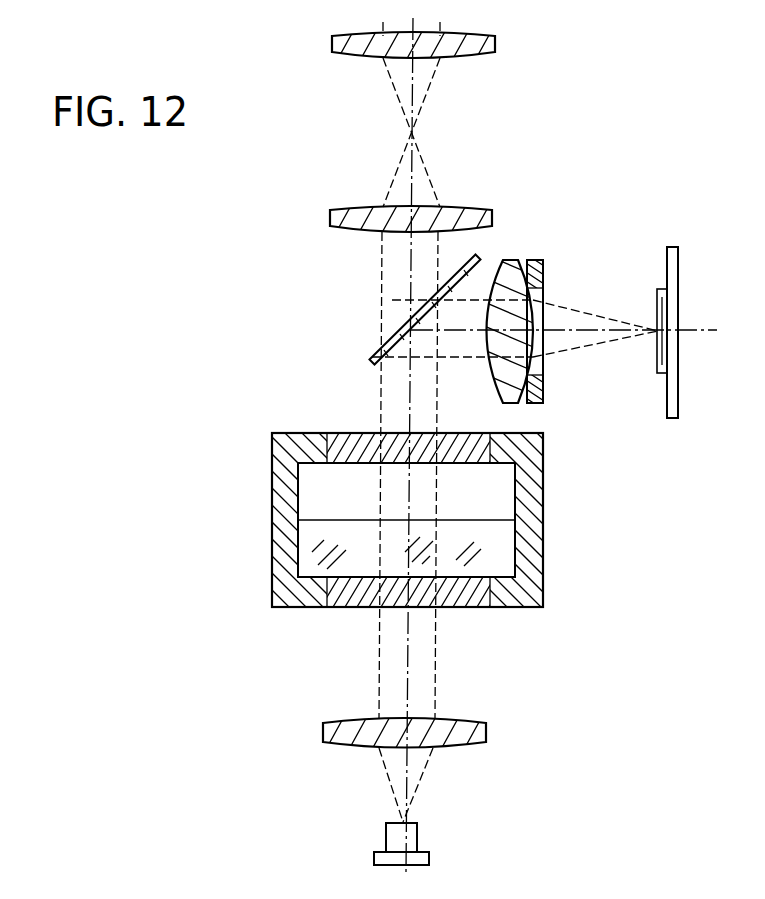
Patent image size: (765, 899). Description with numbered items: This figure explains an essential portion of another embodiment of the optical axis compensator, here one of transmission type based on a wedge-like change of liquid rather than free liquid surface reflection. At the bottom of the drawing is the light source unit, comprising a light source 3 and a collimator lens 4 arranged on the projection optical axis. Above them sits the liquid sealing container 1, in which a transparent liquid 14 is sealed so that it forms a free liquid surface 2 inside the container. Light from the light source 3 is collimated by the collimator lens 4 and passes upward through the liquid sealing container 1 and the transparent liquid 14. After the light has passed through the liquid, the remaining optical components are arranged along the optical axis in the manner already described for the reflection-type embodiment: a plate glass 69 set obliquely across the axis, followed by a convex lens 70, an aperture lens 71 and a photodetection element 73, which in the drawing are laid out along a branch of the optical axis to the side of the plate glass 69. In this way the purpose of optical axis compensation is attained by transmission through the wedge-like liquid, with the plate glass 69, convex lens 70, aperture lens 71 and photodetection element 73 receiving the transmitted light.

The liquid sealing container 1 is at (271, 502).
The free liquid surface 2 is at (497, 520).
The light source 3 is at (417, 833).
The collimator lens 4 is at (472, 746).
The transparent liquid 14 is at (318, 567).
The plate glass 69 is at (370, 357).
The convex lens 70 is at (510, 261).
The aperture lens 71 is at (546, 270).
The photodetection element 73 is at (658, 368).